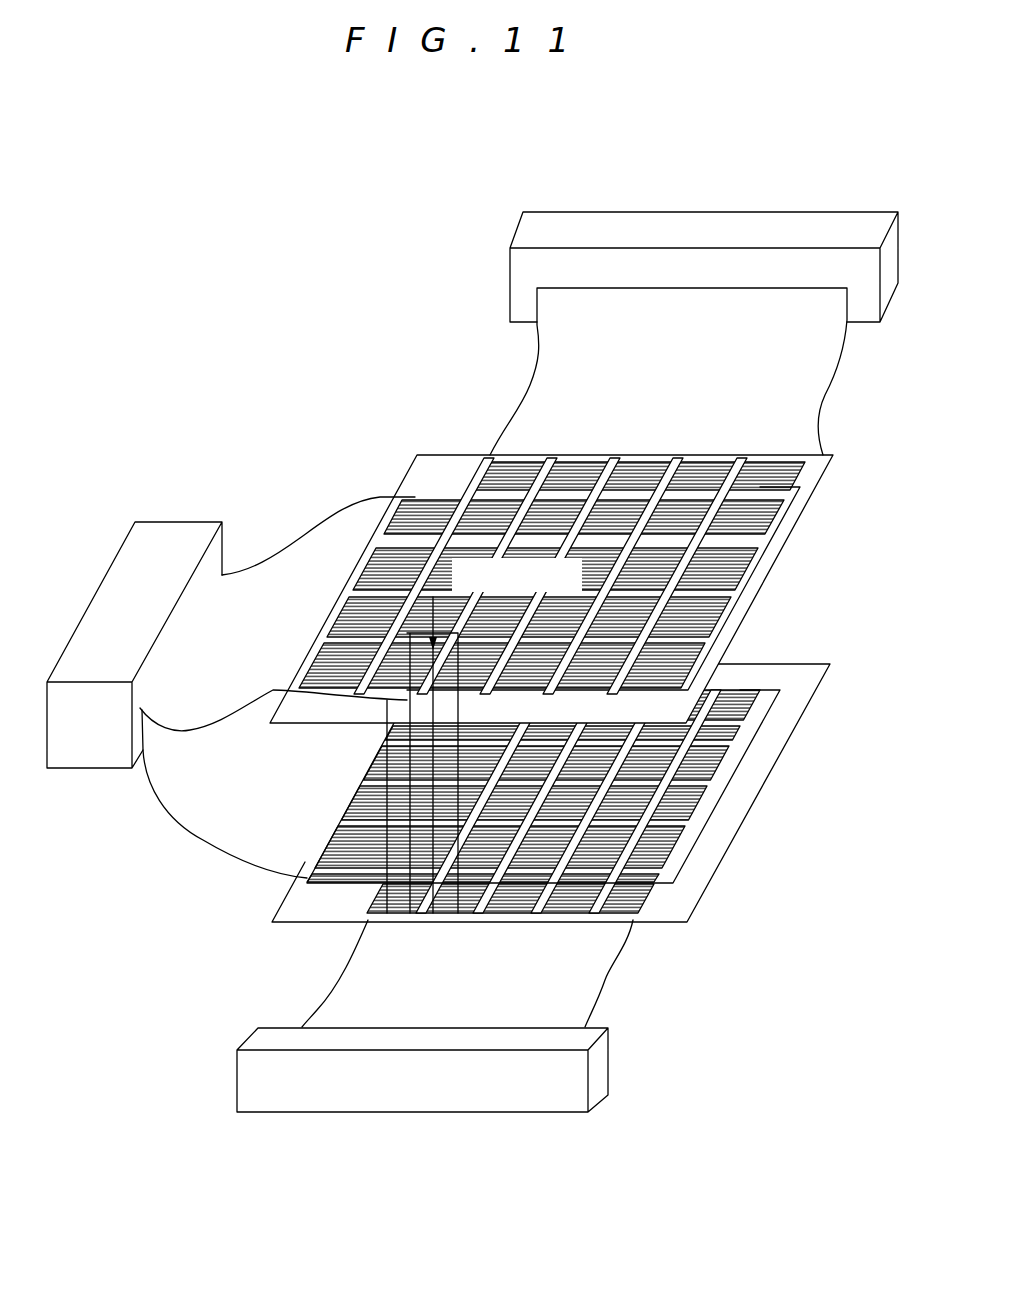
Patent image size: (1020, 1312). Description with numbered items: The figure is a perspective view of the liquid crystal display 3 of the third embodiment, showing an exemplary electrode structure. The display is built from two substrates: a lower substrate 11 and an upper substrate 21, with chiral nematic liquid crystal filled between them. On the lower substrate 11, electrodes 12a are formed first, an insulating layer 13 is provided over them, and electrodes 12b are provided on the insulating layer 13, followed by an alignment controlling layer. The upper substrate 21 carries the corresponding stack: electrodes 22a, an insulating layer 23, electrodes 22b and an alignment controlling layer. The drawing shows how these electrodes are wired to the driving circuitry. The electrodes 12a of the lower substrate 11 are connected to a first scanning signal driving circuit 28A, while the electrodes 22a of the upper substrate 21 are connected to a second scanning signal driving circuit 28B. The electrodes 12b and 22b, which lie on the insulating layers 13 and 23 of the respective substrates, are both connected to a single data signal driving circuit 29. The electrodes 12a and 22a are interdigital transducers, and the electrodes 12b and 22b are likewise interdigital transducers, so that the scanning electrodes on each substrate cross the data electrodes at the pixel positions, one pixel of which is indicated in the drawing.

The liquid crystal display 3 is at (378, 303).
The lower substrate 11 is at (723, 863).
The electrodes 12a is at (557, 902).
The electrodes 12b is at (454, 913).
The insulating layer 13 is at (727, 793).
The upper substrate 21 is at (805, 510).
The electrodes 22a is at (708, 476).
The electrodes 22b is at (400, 527).
The insulating layer 23 is at (750, 590).
The first scanning signal driving circuit 28A is at (505, 1087).
The second scanning signal driving circuit 28B is at (729, 212).
The data signal driving circuit 29 is at (170, 520).